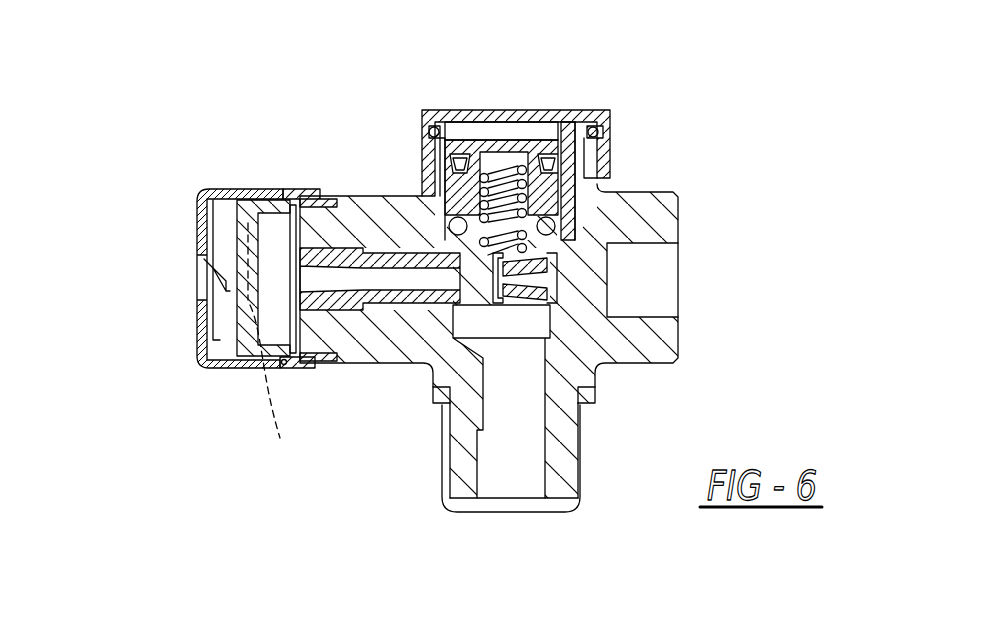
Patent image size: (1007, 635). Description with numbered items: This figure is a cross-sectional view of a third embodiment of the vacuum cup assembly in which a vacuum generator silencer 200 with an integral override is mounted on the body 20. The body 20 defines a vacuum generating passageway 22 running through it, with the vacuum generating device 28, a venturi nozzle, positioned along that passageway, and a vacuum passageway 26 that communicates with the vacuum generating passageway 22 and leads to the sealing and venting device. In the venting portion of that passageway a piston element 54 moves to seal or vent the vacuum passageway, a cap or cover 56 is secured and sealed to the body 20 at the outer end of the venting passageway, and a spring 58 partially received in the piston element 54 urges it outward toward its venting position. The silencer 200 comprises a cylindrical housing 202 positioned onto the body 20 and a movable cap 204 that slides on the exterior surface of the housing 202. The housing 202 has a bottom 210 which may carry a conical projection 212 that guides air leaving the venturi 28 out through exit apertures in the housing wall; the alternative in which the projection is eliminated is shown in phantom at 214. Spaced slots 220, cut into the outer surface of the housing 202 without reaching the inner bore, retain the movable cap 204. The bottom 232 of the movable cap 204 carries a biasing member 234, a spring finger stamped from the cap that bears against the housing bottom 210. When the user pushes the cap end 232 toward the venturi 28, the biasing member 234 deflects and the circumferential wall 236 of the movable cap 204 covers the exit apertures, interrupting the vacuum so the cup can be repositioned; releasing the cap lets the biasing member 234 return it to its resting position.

The body 20 is at (622, 207).
The vacuum generating passageway 22 is at (660, 300).
The vacuum passageway 26 is at (540, 470).
The vacuum generating device 28 is at (419, 248).
The piston element 54 is at (488, 130).
The cap or cover 56 is at (542, 117).
The spring 58 is at (520, 168).
The vacuum generator silencer 200 is at (220, 140).
The housing 202 is at (267, 196).
The movable cap 204 is at (196, 188).
The bottom 210 is at (278, 289).
The conical projection 212 is at (258, 228).
The phantom projection 214 is at (280, 344).
The slots 220 is at (288, 197).
The bottom of the movable cap 232 is at (212, 330).
The biasing member 234 is at (203, 278).
The circumferential wall of the movable cap 236 is at (244, 358).